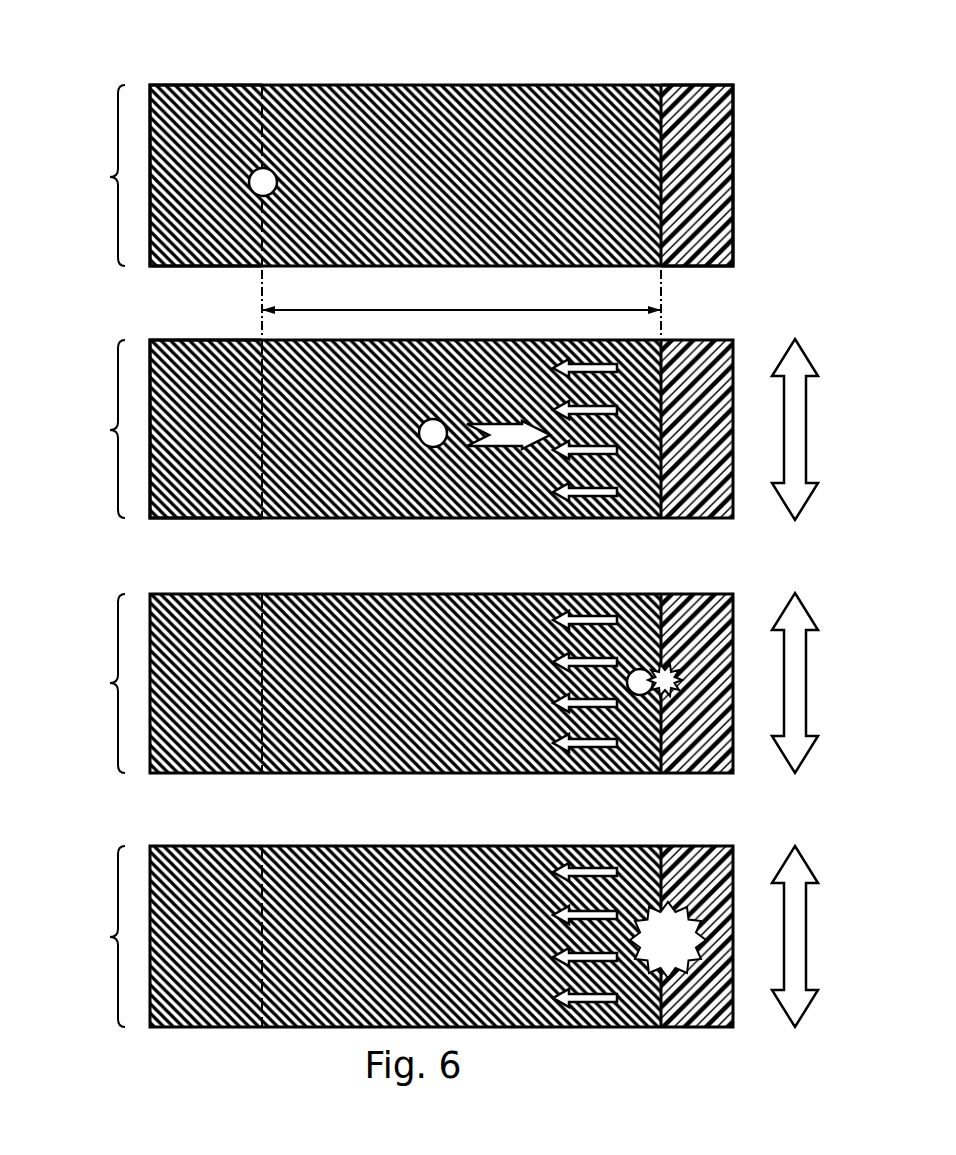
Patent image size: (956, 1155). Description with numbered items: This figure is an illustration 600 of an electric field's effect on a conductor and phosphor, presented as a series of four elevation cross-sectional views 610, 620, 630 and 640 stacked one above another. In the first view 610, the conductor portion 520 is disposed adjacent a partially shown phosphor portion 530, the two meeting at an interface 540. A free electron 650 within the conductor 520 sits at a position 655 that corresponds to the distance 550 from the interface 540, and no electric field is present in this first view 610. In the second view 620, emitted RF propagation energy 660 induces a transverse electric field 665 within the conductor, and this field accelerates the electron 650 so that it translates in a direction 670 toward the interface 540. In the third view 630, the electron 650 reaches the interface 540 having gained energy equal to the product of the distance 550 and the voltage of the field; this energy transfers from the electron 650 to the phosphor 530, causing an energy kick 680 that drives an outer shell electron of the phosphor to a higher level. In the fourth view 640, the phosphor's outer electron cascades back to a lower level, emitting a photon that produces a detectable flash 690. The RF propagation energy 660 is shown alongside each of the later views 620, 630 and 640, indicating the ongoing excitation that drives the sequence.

The conductor portion 520 is at (183, 267).
The phosphor portion 530 is at (735, 165).
The interface 540 is at (661, 74).
The distance 550 is at (482, 303).
The illustration 600 is at (778, 71).
The first view 610 is at (448, 140).
The second view 620 is at (400, 429).
The third view 630 is at (400, 683).
The fourth view 640 is at (400, 936).
The free electron 650 is at (273, 171).
The position 655 is at (265, 76).
The RF propagation energy 660 is at (778, 370).
The transverse electric field 665 is at (601, 502).
The direction 670 is at (516, 449).
The energy kick 680 is at (678, 683).
The detectable flash 690 is at (668, 940).